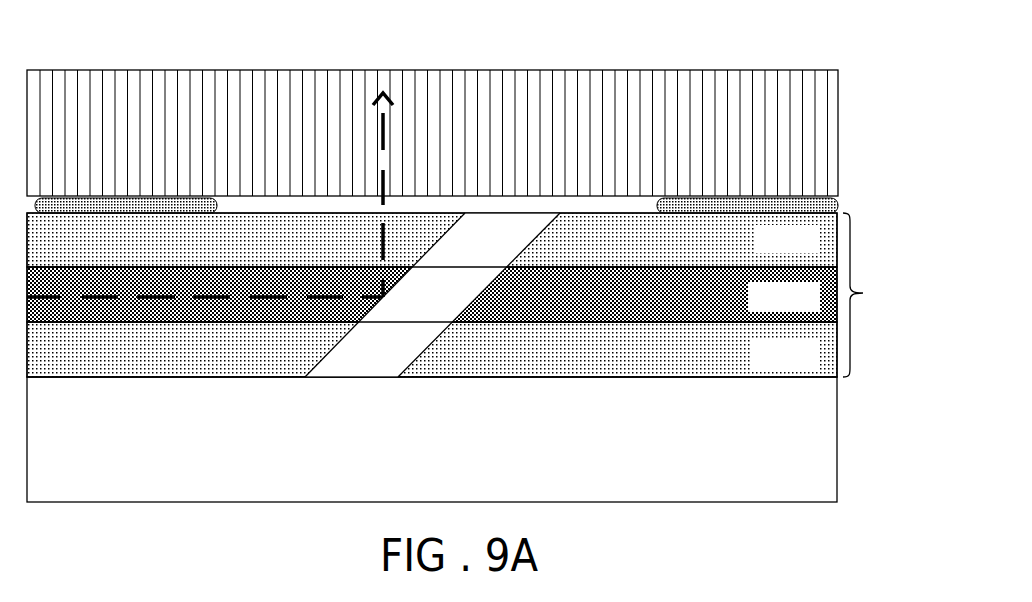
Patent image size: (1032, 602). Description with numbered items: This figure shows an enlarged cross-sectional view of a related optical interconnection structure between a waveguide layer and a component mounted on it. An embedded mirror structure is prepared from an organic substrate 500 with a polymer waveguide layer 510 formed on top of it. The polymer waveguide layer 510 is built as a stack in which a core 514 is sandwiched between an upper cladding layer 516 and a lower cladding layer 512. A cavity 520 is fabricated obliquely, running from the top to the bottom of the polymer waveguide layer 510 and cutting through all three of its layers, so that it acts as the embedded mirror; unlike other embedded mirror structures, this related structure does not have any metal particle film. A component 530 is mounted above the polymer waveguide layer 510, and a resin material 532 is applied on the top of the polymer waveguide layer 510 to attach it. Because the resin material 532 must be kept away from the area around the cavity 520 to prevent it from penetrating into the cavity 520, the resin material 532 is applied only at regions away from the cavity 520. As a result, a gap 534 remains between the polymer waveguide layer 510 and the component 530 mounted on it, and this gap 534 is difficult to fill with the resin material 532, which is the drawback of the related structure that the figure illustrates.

The organic substrate 500 is at (453, 450).
The polymer waveguide layer 510 is at (881, 295).
The lower cladding layer 512 is at (805, 368).
The core 514 is at (805, 308).
The upper cladding layer 516 is at (805, 250).
The cavity 520 is at (453, 311).
The component 530 is at (782, 72).
The resin material 532 is at (838, 205).
The gap 534 is at (466, 205).